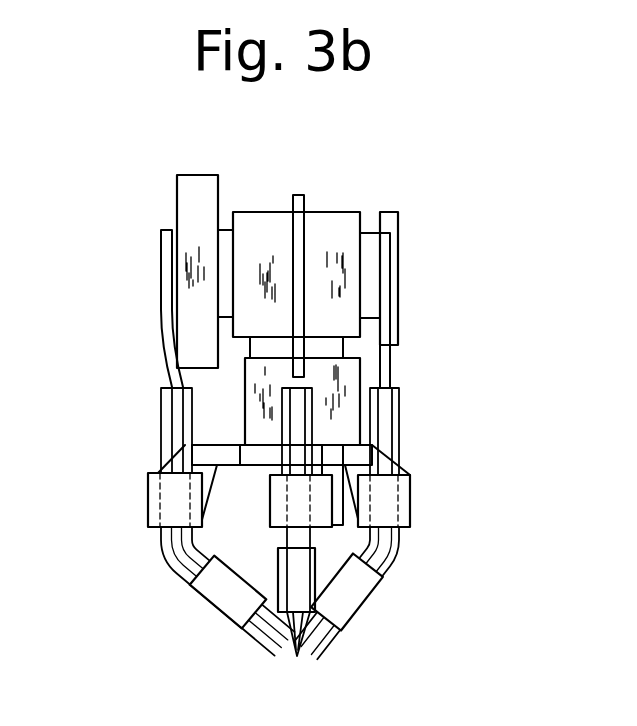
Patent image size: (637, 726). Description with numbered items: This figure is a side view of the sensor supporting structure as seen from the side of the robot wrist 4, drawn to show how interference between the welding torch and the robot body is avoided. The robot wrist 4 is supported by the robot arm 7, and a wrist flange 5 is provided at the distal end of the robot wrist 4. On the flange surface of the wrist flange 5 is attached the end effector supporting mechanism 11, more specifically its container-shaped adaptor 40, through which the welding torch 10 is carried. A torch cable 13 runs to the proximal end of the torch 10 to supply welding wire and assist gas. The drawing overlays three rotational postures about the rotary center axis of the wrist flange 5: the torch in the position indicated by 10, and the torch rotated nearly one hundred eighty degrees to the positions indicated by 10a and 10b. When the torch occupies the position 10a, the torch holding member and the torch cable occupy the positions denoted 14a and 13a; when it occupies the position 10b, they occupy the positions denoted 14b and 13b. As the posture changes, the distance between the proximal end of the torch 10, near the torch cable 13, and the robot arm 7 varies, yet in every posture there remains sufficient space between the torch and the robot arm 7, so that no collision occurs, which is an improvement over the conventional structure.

The robot wrist 4 is at (254, 220).
The torch cable 13 is at (300, 228).
The position of the torch cable 13a is at (390, 292).
The position of the torch cable 13b is at (163, 248).
The robot arm 7 is at (398, 234).
The wrist flange 5 is at (343, 345).
The container-shaped adaptor 40 is at (350, 388).
The position of the torch holding member 14a is at (410, 497).
The position of the torch holding member 14b is at (148, 495).
The welding torch 10 is at (268, 630).
The position of the torch 10a is at (378, 560).
The position of the torch 10b is at (172, 548).
The end effector supporting mechanism 11 is at (215, 612).